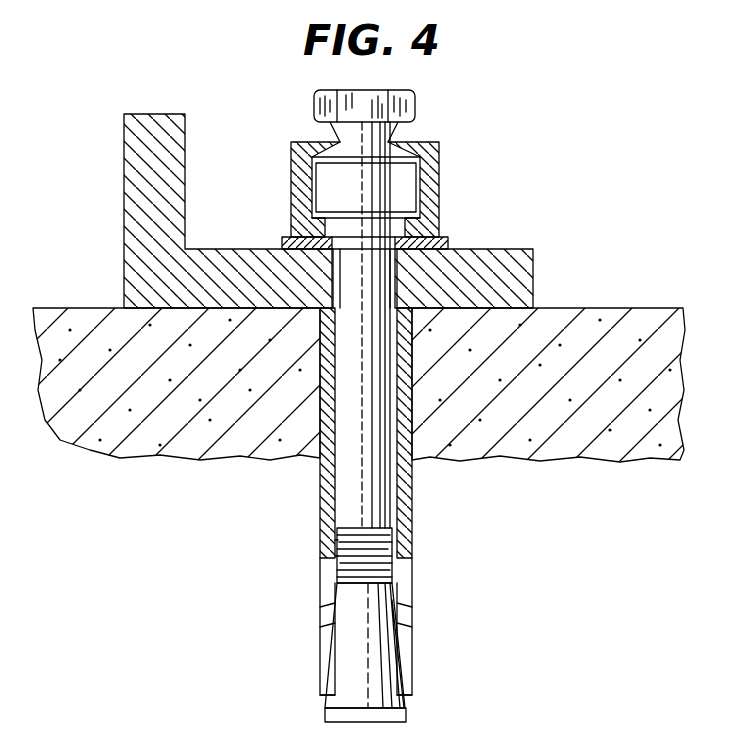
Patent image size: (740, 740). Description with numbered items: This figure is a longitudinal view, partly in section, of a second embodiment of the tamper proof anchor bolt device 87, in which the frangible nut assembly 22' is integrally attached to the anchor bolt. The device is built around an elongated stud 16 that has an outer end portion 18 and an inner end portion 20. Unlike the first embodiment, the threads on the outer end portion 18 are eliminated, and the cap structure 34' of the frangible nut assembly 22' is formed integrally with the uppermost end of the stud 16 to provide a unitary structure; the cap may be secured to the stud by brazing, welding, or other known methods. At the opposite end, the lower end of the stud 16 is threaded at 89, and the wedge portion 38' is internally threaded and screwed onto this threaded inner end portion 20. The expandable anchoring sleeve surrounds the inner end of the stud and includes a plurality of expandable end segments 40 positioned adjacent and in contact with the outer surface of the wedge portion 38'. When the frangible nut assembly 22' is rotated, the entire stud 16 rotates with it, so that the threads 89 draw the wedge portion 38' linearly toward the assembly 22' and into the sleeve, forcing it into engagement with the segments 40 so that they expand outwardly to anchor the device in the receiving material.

The frangible nut assembly 22' is at (404, 94).
The cap structure 34' is at (443, 404).
The outer end portion 18 is at (296, 232).
The elongated stud 16 is at (322, 398).
The anchor bolt device 87 is at (438, 374).
The inner end portion 20 is at (412, 552).
The threads 89 is at (334, 546).
The wedge portion 38' is at (329, 652).
The expandable end segments 40 is at (414, 650).